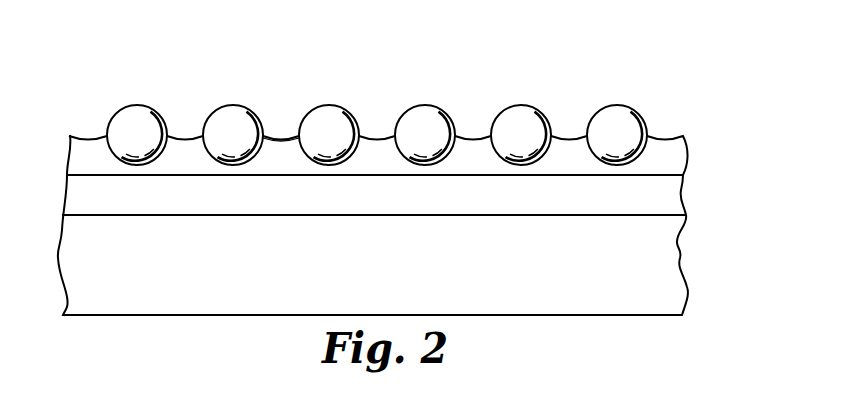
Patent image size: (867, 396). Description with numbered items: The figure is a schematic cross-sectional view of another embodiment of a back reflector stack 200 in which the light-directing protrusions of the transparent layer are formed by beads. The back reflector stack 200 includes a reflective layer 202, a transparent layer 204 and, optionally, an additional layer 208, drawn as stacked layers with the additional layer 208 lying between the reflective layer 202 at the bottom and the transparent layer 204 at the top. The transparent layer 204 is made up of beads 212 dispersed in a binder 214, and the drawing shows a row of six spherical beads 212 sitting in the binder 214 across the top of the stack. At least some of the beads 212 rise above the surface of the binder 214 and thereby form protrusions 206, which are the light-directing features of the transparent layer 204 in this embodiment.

The back reflector stack 200 is at (613, 56).
The reflective layer 202 is at (677, 266).
The transparent layer 204 is at (666, 141).
The protrusions 206 is at (127, 104).
The additional layer 208 is at (681, 197).
The beads 212 is at (212, 128).
The binder 214 is at (280, 151).